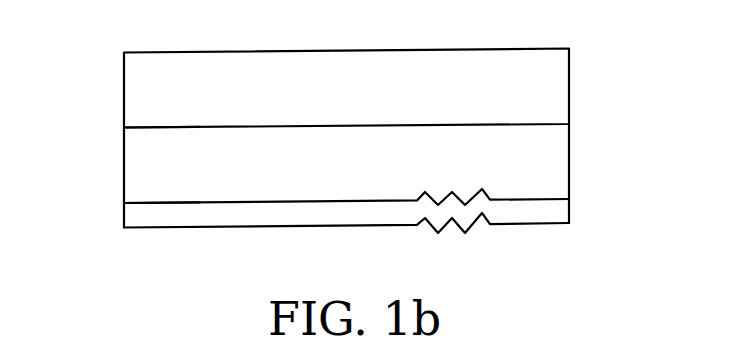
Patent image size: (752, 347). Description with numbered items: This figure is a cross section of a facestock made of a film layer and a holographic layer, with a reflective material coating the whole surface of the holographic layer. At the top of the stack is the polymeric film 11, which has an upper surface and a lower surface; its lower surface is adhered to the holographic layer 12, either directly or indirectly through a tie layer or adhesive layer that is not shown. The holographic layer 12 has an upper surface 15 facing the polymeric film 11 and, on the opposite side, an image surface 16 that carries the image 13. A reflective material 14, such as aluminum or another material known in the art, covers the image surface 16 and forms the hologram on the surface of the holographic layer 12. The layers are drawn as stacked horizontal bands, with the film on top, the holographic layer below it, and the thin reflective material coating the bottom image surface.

The polymeric film layer 11 is at (548, 91).
The holographic layer 12 is at (548, 157).
The reflective material 14 is at (552, 212).
The image 13 is at (478, 231).
The upper surface 15 is at (153, 127).
The image surface 16 is at (160, 203).